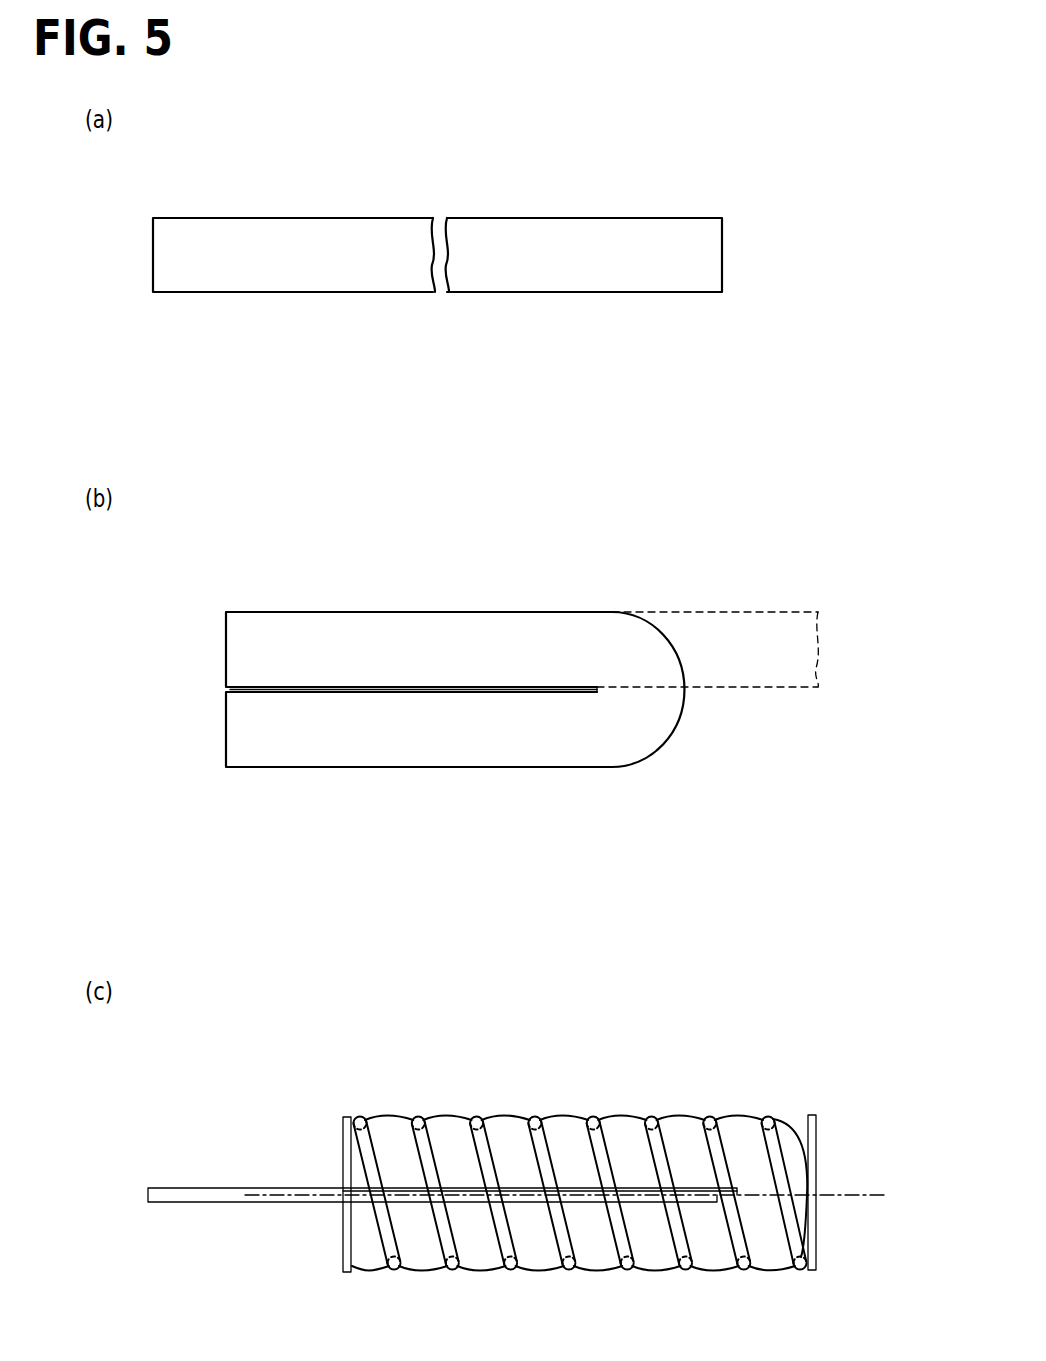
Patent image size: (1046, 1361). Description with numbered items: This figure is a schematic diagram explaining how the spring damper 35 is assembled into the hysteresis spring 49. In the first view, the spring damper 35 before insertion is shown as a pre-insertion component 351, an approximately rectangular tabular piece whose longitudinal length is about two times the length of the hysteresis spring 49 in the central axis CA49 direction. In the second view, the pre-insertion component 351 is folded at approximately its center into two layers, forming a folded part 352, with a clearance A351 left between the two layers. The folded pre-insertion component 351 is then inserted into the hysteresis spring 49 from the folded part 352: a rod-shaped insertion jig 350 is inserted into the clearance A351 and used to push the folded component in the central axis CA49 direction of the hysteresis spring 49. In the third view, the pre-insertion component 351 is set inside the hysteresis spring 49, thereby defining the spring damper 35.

The pre-insertion component 351 is at (694, 261).
The folded part 352 is at (640, 714).
The clearance A351 is at (538, 690).
The insertion jig 350 is at (210, 1196).
The hysteresis spring 49 is at (598, 1148).
The spring damper 35 is at (688, 1162).
The central axis CA49 is at (856, 1190).